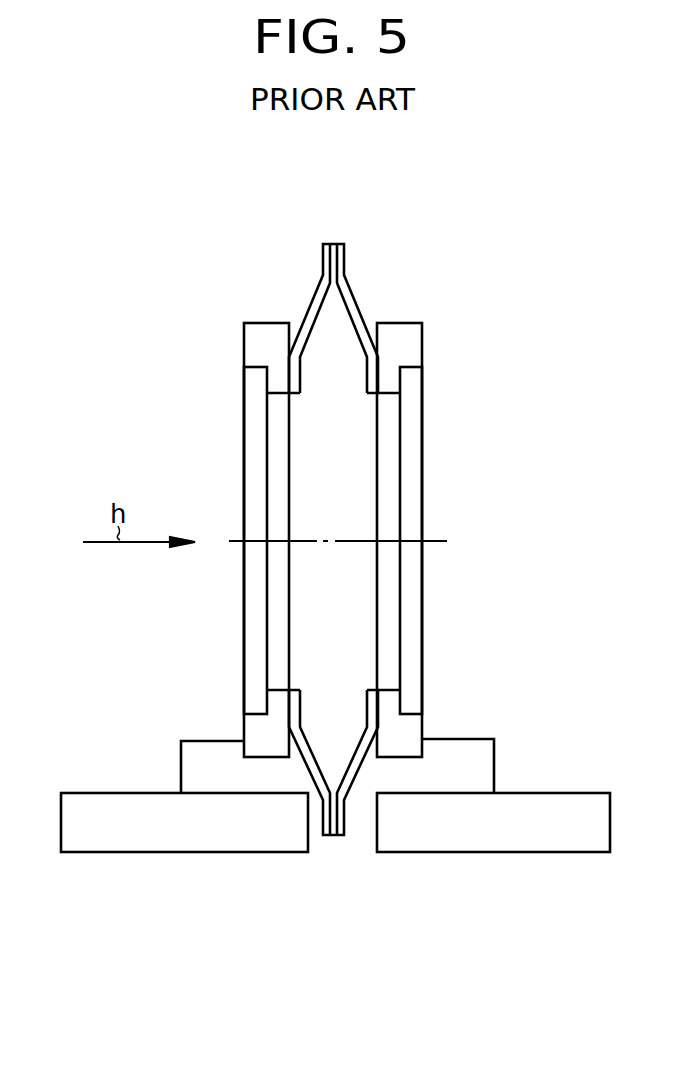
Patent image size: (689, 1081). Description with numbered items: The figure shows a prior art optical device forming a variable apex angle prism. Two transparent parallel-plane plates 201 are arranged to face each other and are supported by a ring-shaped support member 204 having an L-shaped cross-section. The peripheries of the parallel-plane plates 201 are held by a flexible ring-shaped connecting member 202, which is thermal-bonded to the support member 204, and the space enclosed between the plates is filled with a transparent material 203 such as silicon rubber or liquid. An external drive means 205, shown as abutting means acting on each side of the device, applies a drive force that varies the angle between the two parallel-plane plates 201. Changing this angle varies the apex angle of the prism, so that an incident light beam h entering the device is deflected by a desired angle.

The parallel-plane plate 201 is at (245, 410).
The connecting member 202 is at (340, 253).
The transparent material 203 is at (365, 615).
The support member 204 is at (417, 338).
The external drive means 205 is at (87, 853).